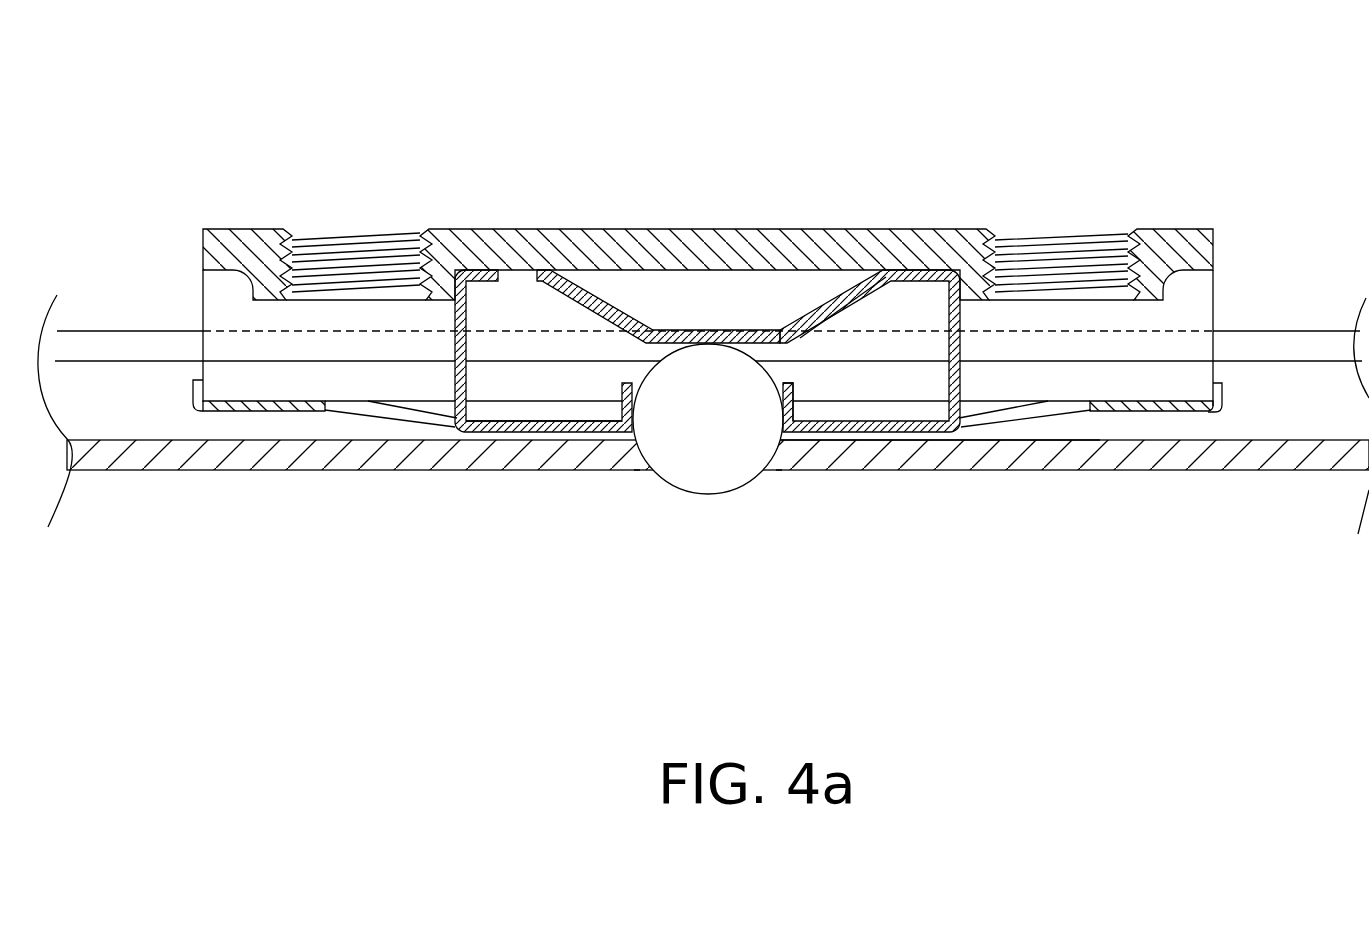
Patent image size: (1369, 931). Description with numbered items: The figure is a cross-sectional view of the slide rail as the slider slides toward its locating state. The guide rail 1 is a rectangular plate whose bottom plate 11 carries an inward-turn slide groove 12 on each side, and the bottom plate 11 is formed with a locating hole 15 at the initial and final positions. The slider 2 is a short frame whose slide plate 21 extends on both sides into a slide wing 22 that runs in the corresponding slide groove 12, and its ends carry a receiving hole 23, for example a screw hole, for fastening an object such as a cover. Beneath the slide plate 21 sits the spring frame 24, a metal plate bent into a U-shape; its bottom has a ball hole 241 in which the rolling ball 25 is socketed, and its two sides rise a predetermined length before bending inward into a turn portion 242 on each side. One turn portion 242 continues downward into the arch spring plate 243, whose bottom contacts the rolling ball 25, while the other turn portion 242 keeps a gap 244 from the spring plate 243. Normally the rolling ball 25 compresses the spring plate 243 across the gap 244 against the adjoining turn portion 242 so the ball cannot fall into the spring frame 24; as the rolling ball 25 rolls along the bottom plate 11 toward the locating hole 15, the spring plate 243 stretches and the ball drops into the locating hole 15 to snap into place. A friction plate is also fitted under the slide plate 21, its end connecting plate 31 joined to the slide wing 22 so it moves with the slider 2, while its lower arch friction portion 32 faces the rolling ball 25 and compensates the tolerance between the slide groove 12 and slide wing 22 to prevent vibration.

The guide rail 1 is at (703, 486).
The bottom plate 11 is at (941, 470).
The slide groove 12 is at (1252, 387).
The locating hole 15 is at (648, 445).
The slider 2 is at (741, 353).
The slide plate 21 is at (777, 229).
The slide wing 22 is at (1067, 383).
The receiving hole 23 is at (354, 252).
The spring frame 24 is at (696, 351).
The ball hole 241 is at (630, 426).
The turn portion 242 is at (470, 285).
The spring plate 243 is at (724, 340).
The gap 244 is at (514, 278).
The rolling ball 25 is at (697, 473).
The connecting plate 31 is at (1218, 393).
The friction portion 32 is at (790, 432).